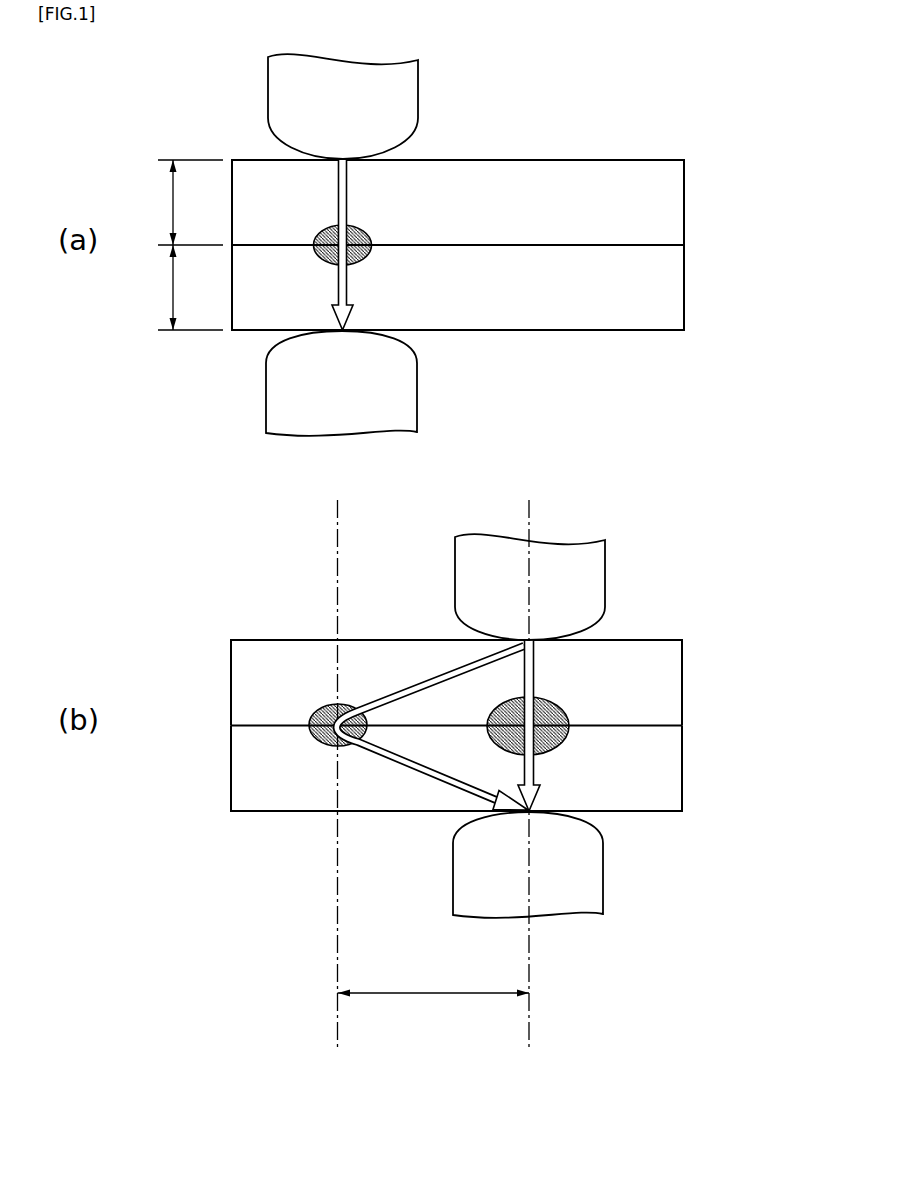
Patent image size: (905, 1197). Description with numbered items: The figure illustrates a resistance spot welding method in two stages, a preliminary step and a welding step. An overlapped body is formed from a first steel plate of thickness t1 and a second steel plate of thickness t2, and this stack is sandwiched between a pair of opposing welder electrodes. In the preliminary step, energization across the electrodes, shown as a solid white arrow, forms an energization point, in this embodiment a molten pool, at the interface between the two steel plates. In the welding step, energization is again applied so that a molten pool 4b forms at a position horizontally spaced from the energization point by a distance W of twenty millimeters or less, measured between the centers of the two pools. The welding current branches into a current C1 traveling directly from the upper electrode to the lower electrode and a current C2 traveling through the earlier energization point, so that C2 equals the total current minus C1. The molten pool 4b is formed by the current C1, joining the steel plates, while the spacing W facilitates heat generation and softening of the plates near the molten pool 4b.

The molten pool 4b is at (545, 710).
The current C1 is at (528, 678).
The current C2 is at (392, 692).
The thickness t1 is at (173, 202).
The thickness t2 is at (173, 287).
The distance W is at (434, 773).